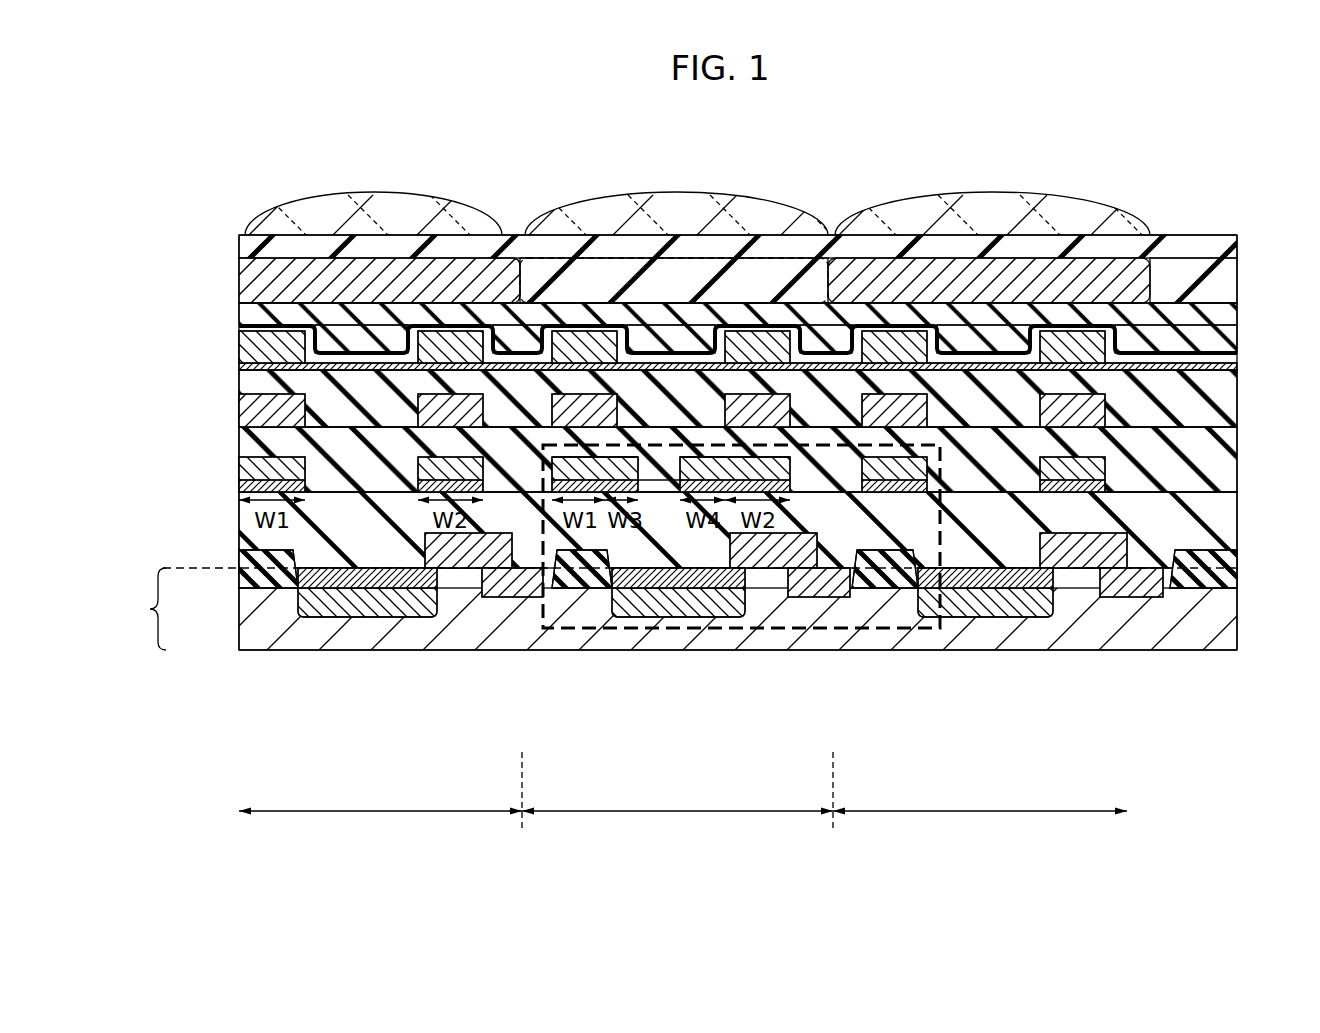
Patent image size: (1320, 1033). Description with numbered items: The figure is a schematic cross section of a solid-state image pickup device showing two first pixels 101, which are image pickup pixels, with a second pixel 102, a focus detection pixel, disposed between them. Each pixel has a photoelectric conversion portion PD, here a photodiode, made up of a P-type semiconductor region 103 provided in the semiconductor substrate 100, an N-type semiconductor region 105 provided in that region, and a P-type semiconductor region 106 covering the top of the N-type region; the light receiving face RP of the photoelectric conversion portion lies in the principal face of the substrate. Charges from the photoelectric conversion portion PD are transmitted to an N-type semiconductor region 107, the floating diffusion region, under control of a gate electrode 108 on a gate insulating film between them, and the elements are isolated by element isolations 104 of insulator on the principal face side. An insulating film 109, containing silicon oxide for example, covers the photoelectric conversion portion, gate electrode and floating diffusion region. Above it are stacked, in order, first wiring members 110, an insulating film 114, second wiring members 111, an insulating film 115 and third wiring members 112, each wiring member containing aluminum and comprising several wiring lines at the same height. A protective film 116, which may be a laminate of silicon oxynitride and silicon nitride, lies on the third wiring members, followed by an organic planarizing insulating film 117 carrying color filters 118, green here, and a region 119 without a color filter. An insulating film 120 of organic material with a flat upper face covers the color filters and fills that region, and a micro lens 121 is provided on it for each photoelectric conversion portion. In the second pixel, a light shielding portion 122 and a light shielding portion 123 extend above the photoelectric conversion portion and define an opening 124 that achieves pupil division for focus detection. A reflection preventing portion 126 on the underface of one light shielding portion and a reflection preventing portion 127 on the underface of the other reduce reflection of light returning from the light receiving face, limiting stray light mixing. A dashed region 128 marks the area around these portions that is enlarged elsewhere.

The semiconductor substrate 100 is at (675, 609).
The first pixel 101 is at (683, 797).
The second pixel 102 is at (677, 791).
The P-type semiconductor region 103 is at (255, 636).
The element isolation 104 is at (268, 583).
The N-type semiconductor region 105 is at (322, 580).
The P-type semiconductor region 106 is at (371, 606).
The N-type semiconductor region 107 is at (505, 586).
The gate electrode 108 is at (465, 560).
The insulating film 109 is at (1222, 522).
The first wiring member 110 is at (256, 475).
The second wiring member 111 is at (256, 409).
The third wiring member 112 is at (256, 351).
The insulating film 114 is at (1222, 478).
The insulating film 115 is at (1222, 420).
The protective film 116 is at (1222, 362).
The insulating film 117 is at (255, 318).
The color filter 118 is at (256, 281).
The region without the color filter 119 is at (800, 256).
The insulating film 120 is at (252, 247).
The micro lens 121 is at (302, 208).
The light shielding portion 122 is at (615, 478).
The light shielding portion 123 is at (712, 463).
The opening 124 is at (657, 482).
The reflection preventing portion 126 is at (640, 480).
The reflection preventing portion 127 is at (690, 478).
The region 128 is at (545, 630).
The light receiving face RP is at (328, 558).
The photoelectric conversion portion PD is at (338, 720).